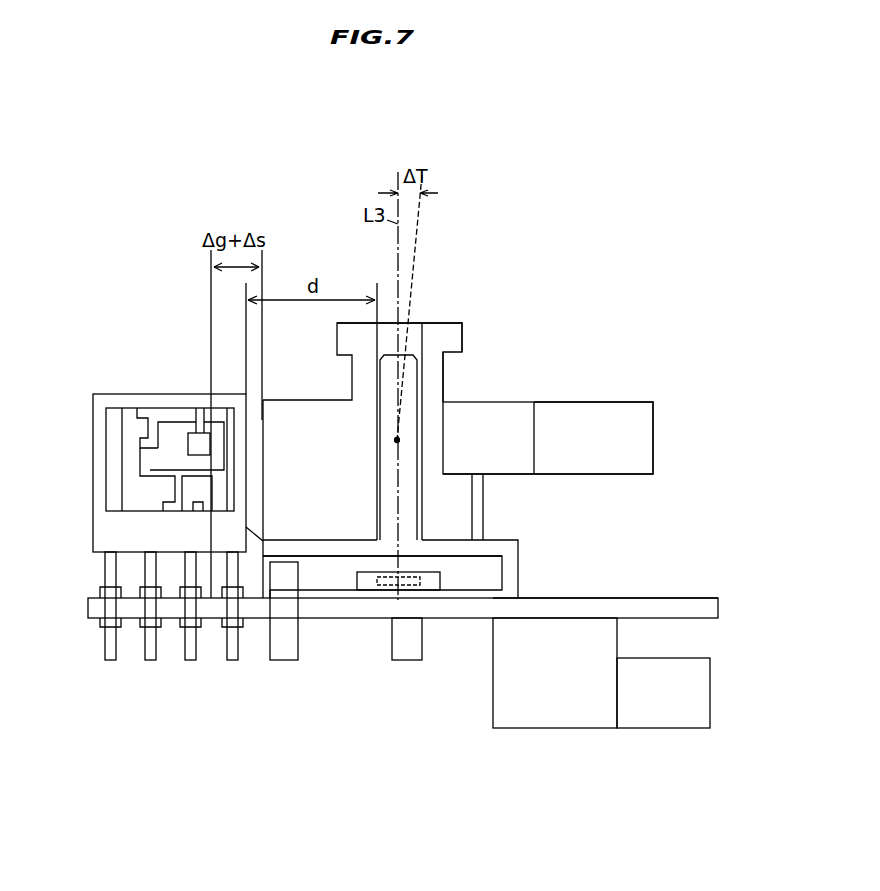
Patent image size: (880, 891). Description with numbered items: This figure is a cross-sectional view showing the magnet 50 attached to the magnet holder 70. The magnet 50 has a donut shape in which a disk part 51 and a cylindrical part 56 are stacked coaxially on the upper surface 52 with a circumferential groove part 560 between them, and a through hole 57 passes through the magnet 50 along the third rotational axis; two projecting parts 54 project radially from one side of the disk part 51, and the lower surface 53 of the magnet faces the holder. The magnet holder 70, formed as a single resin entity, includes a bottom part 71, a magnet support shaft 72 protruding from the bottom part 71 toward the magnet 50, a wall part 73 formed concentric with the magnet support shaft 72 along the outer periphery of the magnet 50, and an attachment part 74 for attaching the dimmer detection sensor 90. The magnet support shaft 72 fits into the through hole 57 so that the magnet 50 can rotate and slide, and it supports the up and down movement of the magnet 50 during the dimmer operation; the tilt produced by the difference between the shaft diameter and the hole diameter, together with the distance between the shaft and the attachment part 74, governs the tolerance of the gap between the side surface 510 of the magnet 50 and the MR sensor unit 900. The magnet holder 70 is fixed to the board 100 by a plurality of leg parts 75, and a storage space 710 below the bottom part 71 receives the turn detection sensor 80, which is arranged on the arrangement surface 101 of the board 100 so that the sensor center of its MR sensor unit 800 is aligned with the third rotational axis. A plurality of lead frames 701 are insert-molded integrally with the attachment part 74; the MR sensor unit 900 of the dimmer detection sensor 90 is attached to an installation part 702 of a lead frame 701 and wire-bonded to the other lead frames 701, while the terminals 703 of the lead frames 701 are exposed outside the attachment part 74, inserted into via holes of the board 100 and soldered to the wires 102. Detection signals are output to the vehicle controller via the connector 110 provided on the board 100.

The magnet holder 70 is at (98, 380).
The attachment part 74 is at (102, 522).
The dimmer detection sensor 90 is at (148, 405).
The MR sensor unit 900 is at (198, 437).
The installation part 702 is at (170, 432).
The lead frames 701 is at (192, 505).
The disk part 51 is at (318, 465).
The side surface 510 is at (261, 425).
The cylindrical part 56 is at (455, 335).
The circumferential groove part 560 is at (443, 370).
The through hole 57 is at (424, 343).
The magnet support shaft 72 is at (405, 405).
The magnet 50 is at (622, 385).
The upper surface 52 is at (548, 402).
The projecting parts 54 is at (645, 447).
The valve bottom 53 is at (525, 474).
The wall part 73 is at (462, 507).
The bottom part 71 is at (510, 577).
The storage space 710 is at (500, 569).
The turn detection sensor 80 is at (435, 583).
The MR sensor unit 800 is at (385, 590).
The leg parts 75 is at (278, 660).
The board 100 is at (713, 608).
The arrangement surface 101 is at (682, 597).
The connector 110 is at (555, 717).
The terminals 703 is at (230, 657).
The wires 102 is at (235, 622).